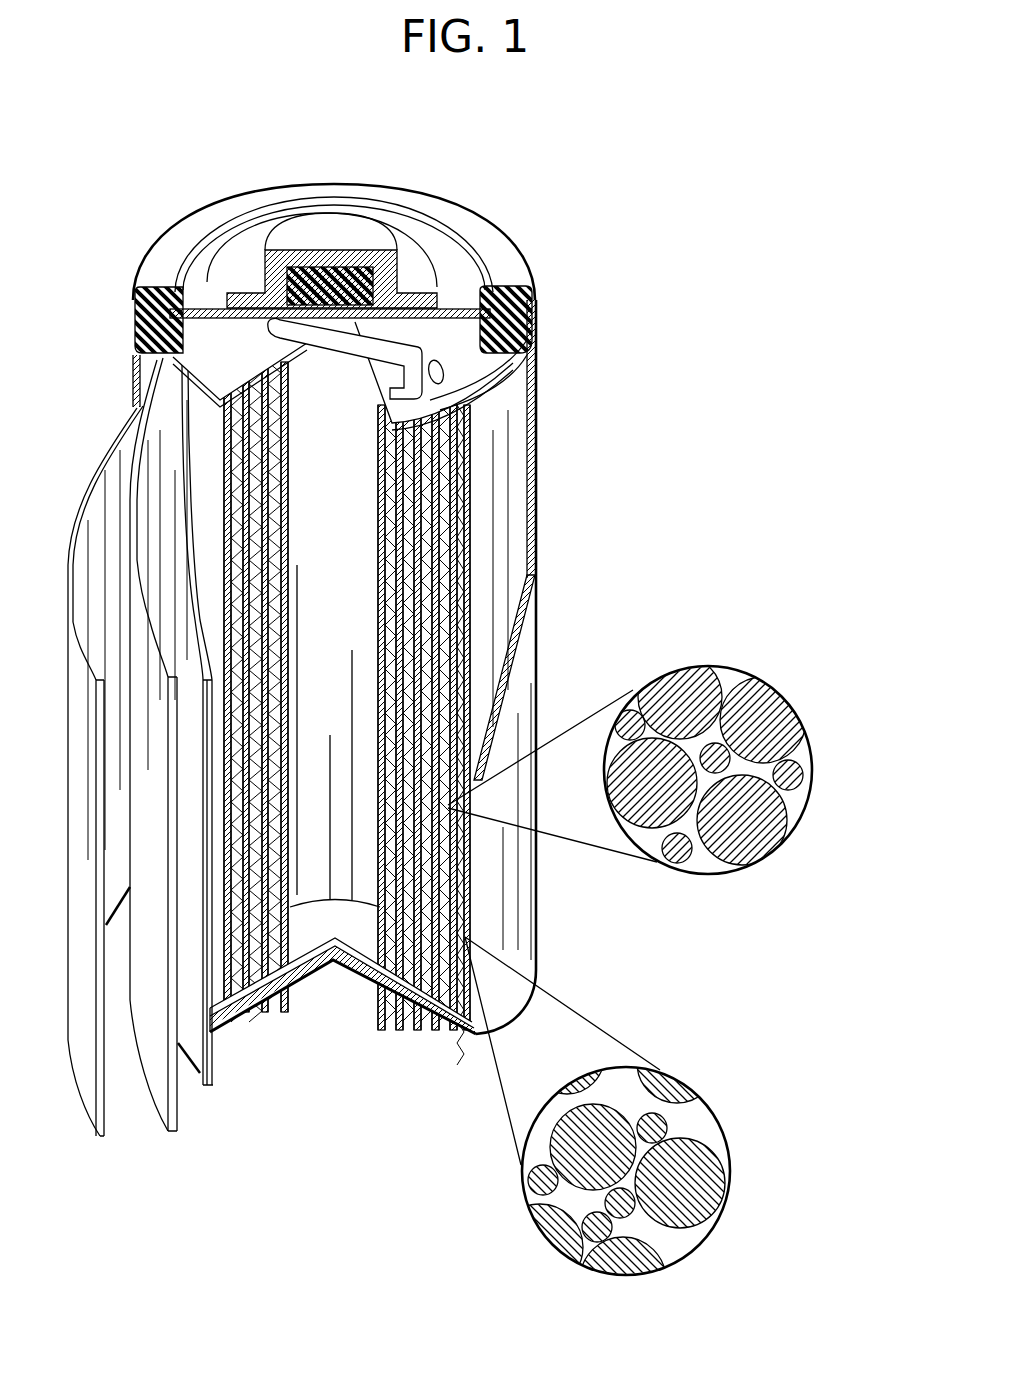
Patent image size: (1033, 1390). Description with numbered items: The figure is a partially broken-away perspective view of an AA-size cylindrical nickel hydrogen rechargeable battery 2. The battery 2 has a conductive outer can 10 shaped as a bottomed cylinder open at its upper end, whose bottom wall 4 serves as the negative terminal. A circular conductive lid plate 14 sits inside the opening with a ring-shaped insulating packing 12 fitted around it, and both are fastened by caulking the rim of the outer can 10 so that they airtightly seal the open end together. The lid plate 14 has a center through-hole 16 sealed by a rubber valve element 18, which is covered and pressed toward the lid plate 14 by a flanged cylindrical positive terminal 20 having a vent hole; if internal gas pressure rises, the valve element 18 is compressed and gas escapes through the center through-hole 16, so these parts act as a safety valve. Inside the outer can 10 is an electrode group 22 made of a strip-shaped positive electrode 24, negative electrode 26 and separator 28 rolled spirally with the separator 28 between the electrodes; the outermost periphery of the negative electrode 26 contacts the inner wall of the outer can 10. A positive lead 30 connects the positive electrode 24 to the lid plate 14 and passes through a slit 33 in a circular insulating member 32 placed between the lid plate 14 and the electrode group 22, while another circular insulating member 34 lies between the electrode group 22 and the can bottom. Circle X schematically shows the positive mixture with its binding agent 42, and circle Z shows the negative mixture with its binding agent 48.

The cylindrical battery 2 is at (511, 179).
The bottom wall 4 is at (270, 985).
The outer can 10 is at (527, 645).
The insulating packing 12 is at (134, 327).
The lid plate 14 is at (210, 290).
The center through-hole 16 is at (527, 319).
The valve element 18 is at (307, 280).
The positive terminal 20 is at (352, 228).
The electrode group 22 is at (520, 545).
The positive electrode 24 is at (217, 1073).
The negative electrode 26 is at (106, 1122).
The separator 28 is at (180, 1115).
The positive lead 30 is at (458, 352).
The insulating member 32 is at (455, 378).
The slit 33 is at (462, 405).
The insulating member 34 is at (356, 935).
The binding agent 42 is at (706, 800).
The binding agent 48 is at (634, 1171).
The circle X is at (797, 827).
The circle Z is at (682, 1265).